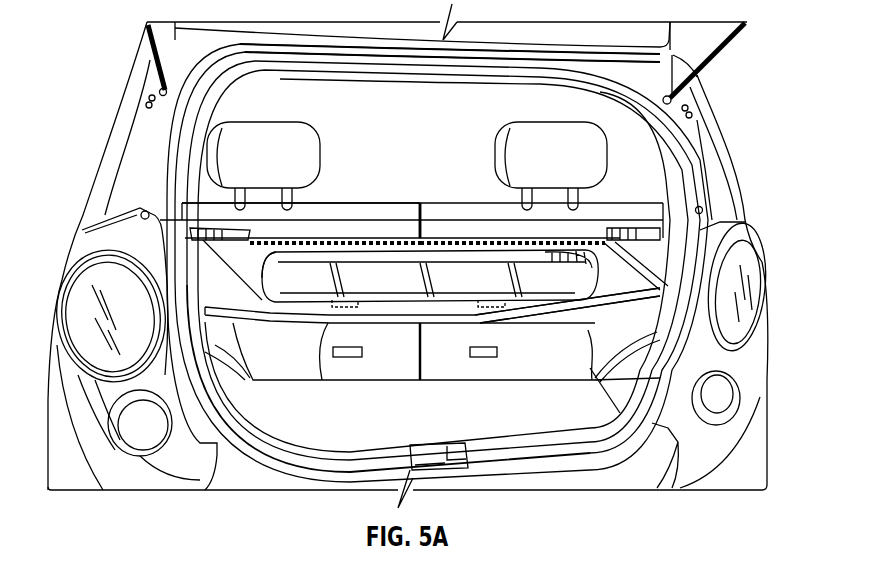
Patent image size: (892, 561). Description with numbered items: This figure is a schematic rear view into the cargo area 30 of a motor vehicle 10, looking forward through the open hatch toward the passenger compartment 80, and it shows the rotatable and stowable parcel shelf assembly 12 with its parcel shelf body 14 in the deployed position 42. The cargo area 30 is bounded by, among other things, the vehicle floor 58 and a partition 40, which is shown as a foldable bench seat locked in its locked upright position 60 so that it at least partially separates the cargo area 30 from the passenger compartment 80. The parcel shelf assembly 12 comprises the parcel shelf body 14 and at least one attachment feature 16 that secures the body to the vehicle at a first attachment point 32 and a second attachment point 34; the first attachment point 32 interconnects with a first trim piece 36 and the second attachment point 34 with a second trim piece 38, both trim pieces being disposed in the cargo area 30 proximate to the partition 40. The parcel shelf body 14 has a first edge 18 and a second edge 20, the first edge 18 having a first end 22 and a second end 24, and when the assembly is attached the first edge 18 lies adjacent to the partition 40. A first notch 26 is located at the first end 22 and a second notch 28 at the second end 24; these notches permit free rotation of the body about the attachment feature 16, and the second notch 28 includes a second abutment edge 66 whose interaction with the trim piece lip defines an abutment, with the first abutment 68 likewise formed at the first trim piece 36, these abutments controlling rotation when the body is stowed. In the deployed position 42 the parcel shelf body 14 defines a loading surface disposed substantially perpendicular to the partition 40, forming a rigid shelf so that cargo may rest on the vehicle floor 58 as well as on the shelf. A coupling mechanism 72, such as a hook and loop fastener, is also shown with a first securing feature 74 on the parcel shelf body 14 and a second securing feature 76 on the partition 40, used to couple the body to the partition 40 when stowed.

The motor vehicle 10 is at (106, 38).
The parcel shelf assembly 12 is at (335, 228).
The parcel shelf body 14 is at (450, 288).
The attachment feature 16 is at (458, 240).
The first edge 18 is at (428, 240).
The second edge 20 is at (490, 358).
The first end 22 is at (270, 240).
The second end 24 is at (580, 240).
The first notch 26 is at (276, 263).
The second notch 28 is at (603, 230).
The cargo area 30 is at (387, 361).
The first attachment point 32 is at (250, 240).
The second attachment point 34 is at (593, 240).
The first trim piece 36 is at (192, 237).
The second trim piece 38 is at (620, 240).
The partition 40 is at (377, 233).
The deployed position 42 is at (663, 313).
The vehicle floor 58 is at (390, 418).
The locked upright position 60 is at (445, 190).
The second abutment edge 66 is at (328, 324).
The first abutment 68 is at (531, 322).
The coupling mechanism 72 is at (318, 338).
The first securing feature 74 is at (352, 298).
The second securing feature 76 is at (346, 358).
The passenger compartment 80 is at (418, 112).